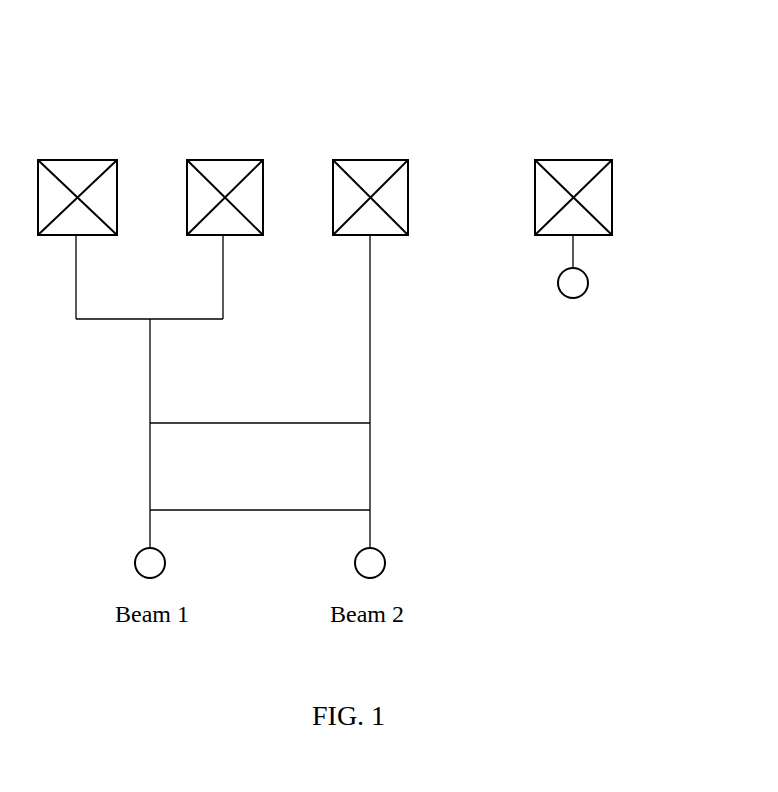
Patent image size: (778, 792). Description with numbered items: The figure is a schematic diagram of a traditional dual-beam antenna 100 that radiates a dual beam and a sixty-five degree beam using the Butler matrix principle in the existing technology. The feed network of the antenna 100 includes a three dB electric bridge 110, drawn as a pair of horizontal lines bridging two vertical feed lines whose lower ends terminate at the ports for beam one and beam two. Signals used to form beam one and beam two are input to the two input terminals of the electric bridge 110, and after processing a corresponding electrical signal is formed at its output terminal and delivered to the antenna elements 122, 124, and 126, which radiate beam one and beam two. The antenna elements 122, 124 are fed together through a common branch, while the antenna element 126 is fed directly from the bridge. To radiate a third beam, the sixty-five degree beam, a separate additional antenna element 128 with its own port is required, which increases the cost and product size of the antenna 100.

The antenna 100 is at (498, 48).
The 3 dB electric bridge 110 is at (338, 480).
The antenna element 122 is at (135, 148).
The antenna element 124 is at (280, 147).
The antenna element 126 is at (398, 193).
The antenna element 128 is at (590, 198).